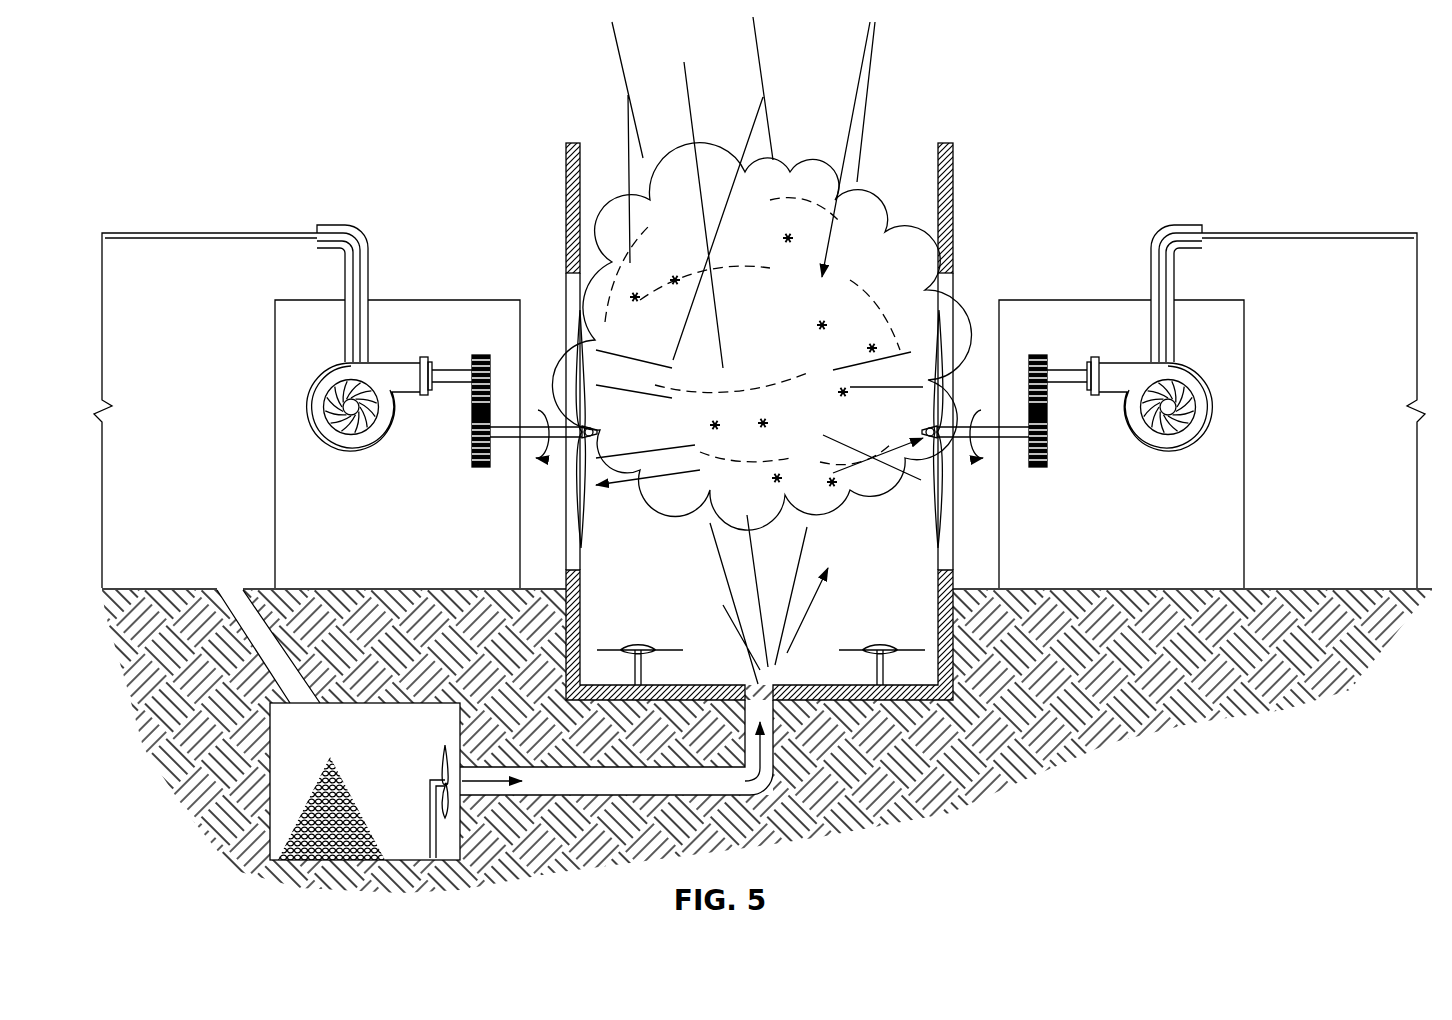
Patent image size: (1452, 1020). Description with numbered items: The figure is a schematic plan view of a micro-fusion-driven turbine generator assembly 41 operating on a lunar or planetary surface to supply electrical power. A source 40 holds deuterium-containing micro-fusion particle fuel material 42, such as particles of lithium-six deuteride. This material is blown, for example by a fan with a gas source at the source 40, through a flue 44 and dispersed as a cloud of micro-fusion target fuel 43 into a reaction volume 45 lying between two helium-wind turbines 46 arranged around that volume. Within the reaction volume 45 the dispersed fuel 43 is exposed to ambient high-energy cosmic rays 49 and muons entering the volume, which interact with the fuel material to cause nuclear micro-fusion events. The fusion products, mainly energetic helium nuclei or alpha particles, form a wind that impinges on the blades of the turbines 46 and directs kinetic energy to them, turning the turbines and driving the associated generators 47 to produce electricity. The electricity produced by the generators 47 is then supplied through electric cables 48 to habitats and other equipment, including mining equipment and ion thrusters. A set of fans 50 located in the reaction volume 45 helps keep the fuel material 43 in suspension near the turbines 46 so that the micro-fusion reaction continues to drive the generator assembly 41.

The source 40 is at (403, 703).
The generator assembly 41 is at (496, 176).
The micro-fusion particle fuel material 42 is at (335, 756).
The micro-fusion target fuel 43 is at (817, 597).
The flue 44 is at (737, 722).
The reaction volume 45 is at (672, 553).
The helium-wind turbines 46 is at (578, 345).
The generators 47 is at (350, 448).
The electric cables 48 is at (206, 232).
The cosmic rays 49 is at (775, 57).
The fans 50 is at (630, 648).